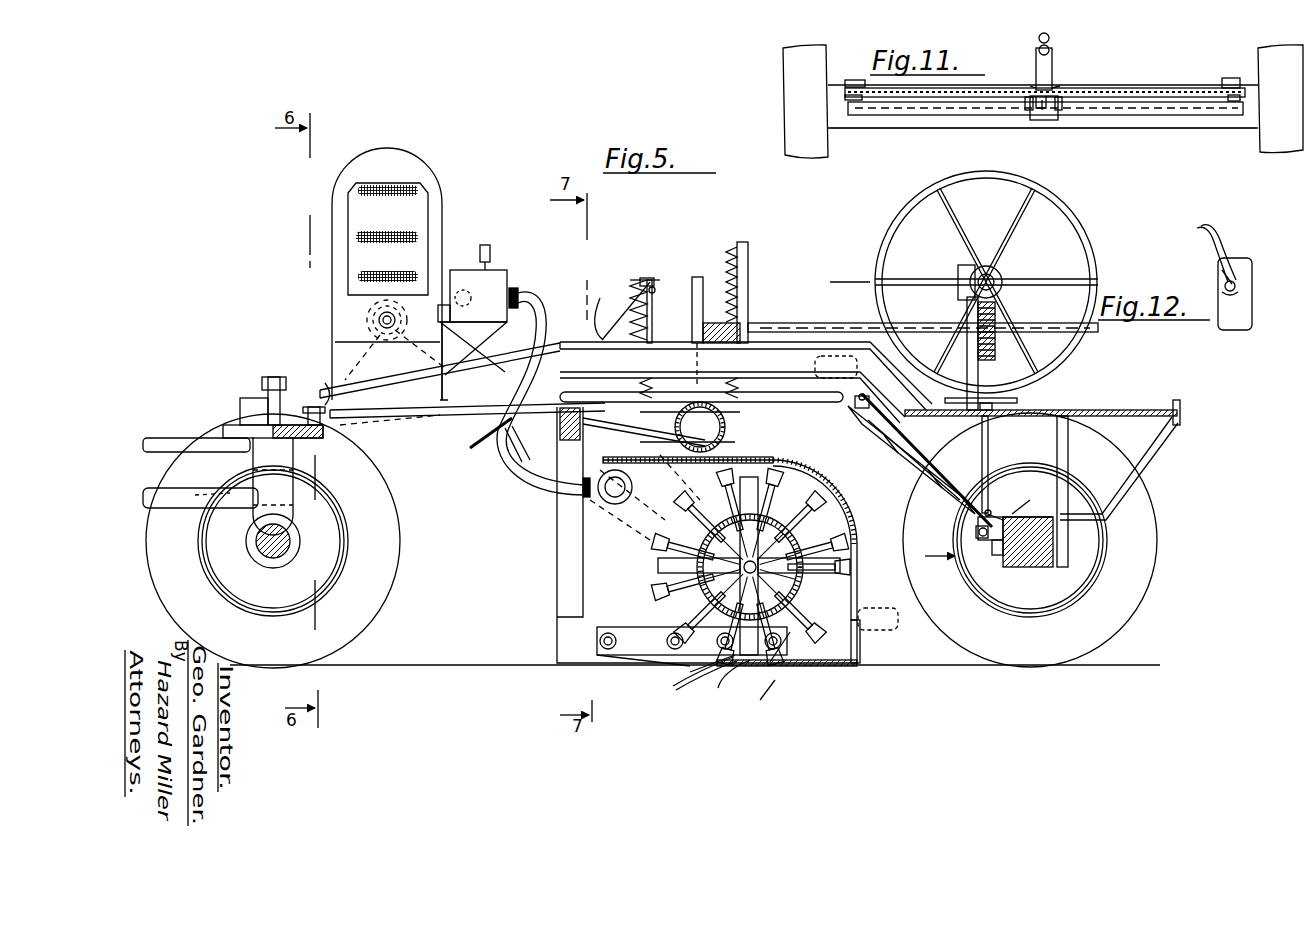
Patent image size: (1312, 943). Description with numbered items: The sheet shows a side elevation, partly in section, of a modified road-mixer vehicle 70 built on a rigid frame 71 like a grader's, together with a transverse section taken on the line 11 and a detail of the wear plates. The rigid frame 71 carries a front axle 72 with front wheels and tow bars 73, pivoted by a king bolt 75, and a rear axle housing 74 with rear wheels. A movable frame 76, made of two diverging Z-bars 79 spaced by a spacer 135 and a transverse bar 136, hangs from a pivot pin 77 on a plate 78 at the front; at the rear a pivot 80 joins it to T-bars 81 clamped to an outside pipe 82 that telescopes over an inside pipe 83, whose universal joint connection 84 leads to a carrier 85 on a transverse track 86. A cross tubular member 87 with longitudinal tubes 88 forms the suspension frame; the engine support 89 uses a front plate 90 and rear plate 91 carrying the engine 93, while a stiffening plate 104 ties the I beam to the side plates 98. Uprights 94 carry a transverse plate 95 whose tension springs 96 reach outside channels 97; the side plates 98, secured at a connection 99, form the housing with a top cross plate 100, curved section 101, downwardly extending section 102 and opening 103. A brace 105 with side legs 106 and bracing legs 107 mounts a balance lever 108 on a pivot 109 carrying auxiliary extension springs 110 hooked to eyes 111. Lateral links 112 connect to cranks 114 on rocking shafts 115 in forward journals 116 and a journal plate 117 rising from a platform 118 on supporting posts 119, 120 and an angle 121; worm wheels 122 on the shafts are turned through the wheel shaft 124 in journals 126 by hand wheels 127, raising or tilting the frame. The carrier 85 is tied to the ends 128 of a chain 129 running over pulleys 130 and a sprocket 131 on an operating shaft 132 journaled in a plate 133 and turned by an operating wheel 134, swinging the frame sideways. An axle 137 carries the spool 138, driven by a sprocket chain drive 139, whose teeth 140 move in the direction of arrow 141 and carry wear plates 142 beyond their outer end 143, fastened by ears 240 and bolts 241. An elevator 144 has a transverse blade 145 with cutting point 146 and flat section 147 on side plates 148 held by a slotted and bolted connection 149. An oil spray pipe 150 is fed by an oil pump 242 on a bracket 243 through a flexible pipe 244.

In FIG. 5, the section line 11 is at (940, 556).
In FIG. 5, the vehicle 70 is at (838, 282).
In FIG. 5, the rigid frame 71 is at (575, 325).
In FIG. 5, the front axle 72 is at (262, 543).
In FIG. 5, the tow bars 73 is at (165, 421).
In FIG. 5, the rear axle housing 74 is at (1055, 550).
In FIG. 11, the rear axle housing 74 is at (1241, 129).
In FIG. 5, the king bolt 75 is at (262, 400).
In FIG. 5, the movable frame 76 is at (498, 452).
In FIG. 5, the pivot pin 77 is at (281, 392).
In FIG. 5, the plate 78 is at (250, 430).
In FIG. 5, the Z-bars 79 is at (470, 426).
In FIG. 5, the pivot 80 is at (858, 410).
In FIG. 5, the T-bars 81 is at (905, 444).
In FIG. 5, the outside pipe 82 is at (880, 432).
In FIG. 5, the inside pipe 83 is at (955, 522).
In FIG. 11, the inside pipe 83 is at (1052, 75).
In FIG. 5, the universal joint connection 84 is at (980, 540).
In FIG. 11, the universal joint connection 84 is at (1030, 112).
In FIG. 5, the carrier 85 is at (992, 542).
In FIG. 11, the carrier 85 is at (1045, 121).
In FIG. 5, the transverse track 86 is at (1000, 556).
In FIG. 11, the transverse track 86 is at (1188, 116).
In FIG. 5, the cross tubular member 87 is at (735, 457).
In FIG. 5, the longitudinal tubes 88 is at (524, 464).
In FIG. 5, the engine support 89 is at (318, 336).
In FIG. 5, the front plate 90 is at (328, 384).
In FIG. 5, the rear plate 91 is at (476, 342).
In FIG. 5, the engine 93 is at (447, 212).
In FIG. 5, the uprights 94 is at (748, 285).
In FIG. 5, the transverse plate 95 is at (733, 250).
In FIG. 5, the tension springs 96 is at (648, 330).
In FIG. 5, the outside channels 97 is at (632, 487).
In FIG. 5, the side plates 98 is at (635, 564).
In FIG. 5, the connection 99 is at (726, 428).
In FIG. 5, the top cross plate 100 is at (612, 450).
In FIG. 5, the curved section 101 is at (848, 472).
In FIG. 5, the downwardly extending section 102 is at (857, 588).
In FIG. 5, the opening 103 is at (860, 642).
In FIG. 5, the stiffening plate 104 is at (562, 538).
In FIG. 5, the brace 105 is at (646, 277).
In FIG. 5, the side legs 106 is at (653, 330).
In FIG. 5, the bracing legs 107 is at (612, 305).
In FIG. 5, the balance lever 108 is at (647, 280).
In FIG. 5, the pivot 109 is at (650, 292).
In FIG. 5, the auxiliary extension spring 110 is at (625, 312).
In FIG. 5, the eyes 111 is at (656, 380).
In FIG. 5, the lateral links 112 is at (698, 290).
In FIG. 5, the crank 114 is at (705, 342).
In FIG. 5, the rocking shafts 115 is at (808, 323).
In FIG. 5, the forward journals 116 is at (740, 322).
In FIG. 5, the journal plate 117 is at (967, 338).
In FIG. 5, the platform 118 is at (1097, 408).
In FIG. 5, the supporting post 119 is at (1145, 462).
In FIG. 5, the supporting post 120 is at (1069, 472).
In FIG. 5, the angle 121 is at (988, 422).
In FIG. 5, the worm wheel 122 is at (997, 337).
In FIG. 5, the wheel shaft 124 is at (990, 279).
In FIG. 5, the journals 126 is at (958, 273).
In FIG. 5, the hand wheel 127 is at (931, 198).
In FIG. 5, the chain ends 128 is at (1032, 562).
In FIG. 11, the chain ends 128 is at (1060, 110).
In FIG. 5, the chain 129 is at (1012, 518).
In FIG. 11, the chain 129 is at (1132, 98).
In FIG. 11, the pulleys 130 is at (1232, 78).
In FIG. 5, the sprocket 131 is at (1000, 514).
In FIG. 11, the sprocket 131 is at (1030, 87).
In FIG. 5, the operating shaft 132 is at (1000, 500).
In FIG. 11, the operating shaft 132 is at (1050, 38).
In FIG. 5, the plate 133 is at (1028, 500).
In FIG. 5, the operating wheel 134 is at (1017, 401).
In FIG. 5, the spacer 135 is at (838, 392).
In FIG. 5, the transverse bar 136 is at (735, 391).
In FIG. 5, the axle 137 is at (860, 634).
In FIG. 5, the spool 138 is at (692, 586).
In FIG. 5, the sprocket chain drive 139 is at (440, 414).
In FIG. 5, the teeth 140 is at (748, 660).
In FIG. 12, the teeth 140 is at (1226, 320).
In FIG. 5, the arrow 141 is at (655, 630).
In FIG. 5, the wear plates 142 is at (664, 566).
In FIG. 12, the wear plates 142 is at (1200, 238).
In FIG. 5, the outer end 143 is at (698, 670).
In FIG. 12, the outer end 143 is at (1236, 282).
In FIG. 5, the elevator 144 is at (772, 695).
In FIG. 5, the transverse blade 145 is at (745, 680).
In FIG. 5, the cutting point 146 is at (705, 688).
In FIG. 5, the flat section 147 is at (772, 664).
In FIG. 5, the side plates 148 is at (655, 657).
In FIG. 5, the slotted and bolted connection 149 is at (608, 652).
In FIG. 5, the oil spray pipe 150 is at (612, 505).
In FIG. 12, the ears 240 is at (1225, 270).
In FIG. 12, the bolts 241 is at (1240, 289).
In FIG. 5, the oil pump 242 is at (496, 288).
In FIG. 5, the bracket 243 is at (480, 340).
In FIG. 5, the flexible pipe 244 is at (545, 310).